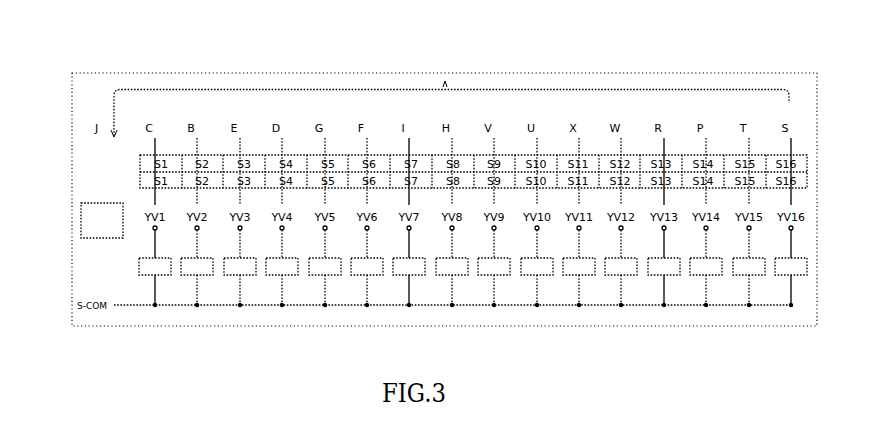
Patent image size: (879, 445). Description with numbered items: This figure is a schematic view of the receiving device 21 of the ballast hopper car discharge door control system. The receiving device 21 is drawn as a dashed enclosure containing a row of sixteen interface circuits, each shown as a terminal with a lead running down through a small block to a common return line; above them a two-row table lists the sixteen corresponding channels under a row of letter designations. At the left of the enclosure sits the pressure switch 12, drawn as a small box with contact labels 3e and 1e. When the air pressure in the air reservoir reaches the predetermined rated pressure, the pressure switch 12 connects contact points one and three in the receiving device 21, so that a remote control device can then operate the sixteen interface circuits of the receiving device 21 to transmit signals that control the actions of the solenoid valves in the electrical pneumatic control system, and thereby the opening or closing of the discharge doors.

The pressure switch 12 is at (77, 127).
The receiving device 21 is at (347, 73).
The RPS output terminal 3e is at (112, 212).
The RPS output terminal 1e is at (112, 231).